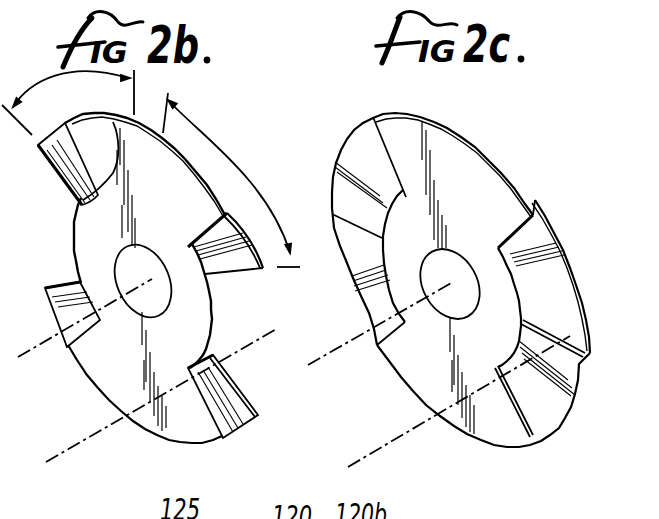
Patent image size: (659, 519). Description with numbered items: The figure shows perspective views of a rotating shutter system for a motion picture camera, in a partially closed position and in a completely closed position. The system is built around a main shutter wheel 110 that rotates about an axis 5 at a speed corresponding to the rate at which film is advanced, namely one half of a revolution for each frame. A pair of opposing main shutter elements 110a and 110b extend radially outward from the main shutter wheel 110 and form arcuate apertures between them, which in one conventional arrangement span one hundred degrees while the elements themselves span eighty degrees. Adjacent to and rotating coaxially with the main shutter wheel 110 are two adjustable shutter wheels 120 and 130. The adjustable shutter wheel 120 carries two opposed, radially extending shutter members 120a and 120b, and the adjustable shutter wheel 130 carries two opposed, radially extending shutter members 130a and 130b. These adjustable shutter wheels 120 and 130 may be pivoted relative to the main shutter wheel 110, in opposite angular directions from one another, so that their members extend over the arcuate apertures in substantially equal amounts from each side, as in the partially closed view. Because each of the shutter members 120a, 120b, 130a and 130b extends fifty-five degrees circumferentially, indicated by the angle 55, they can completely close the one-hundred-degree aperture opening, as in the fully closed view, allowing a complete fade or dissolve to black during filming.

In FIG. 2B, the axis 5 is at (50, 336).
In FIG. 2C, the axis 5 is at (348, 343).
In FIG. 2B, the 55° circumferential extent 55 is at (150, 209).
In FIG. 2B, the main shutter wheel 110 is at (97, 392).
In FIG. 2B, the main shutter element 110a is at (170, 420).
In FIG. 2C, the main shutter element 110a is at (420, 380).
In FIG. 2B, the main shutter element 110b is at (78, 218).
In FIG. 2C, the main shutter element 110b is at (463, 167).
In FIG. 2B, the adjustable shutter wheel 120 is at (253, 370).
In FIG. 2B, the shutter member 120a is at (238, 418).
In FIG. 2C, the shutter member 120a is at (550, 412).
In FIG. 2B, the shutter member 120b is at (65, 157).
In FIG. 2C, the shutter member 120b is at (360, 162).
In FIG. 2B, the adjustable shutter wheel 130 is at (253, 232).
In FIG. 2B, the shutter member 130a is at (75, 292).
In FIG. 2C, the shutter member 130a is at (370, 297).
In FIG. 2B, the shutter member 130b is at (240, 265).
In FIG. 2C, the shutter member 130b is at (558, 275).